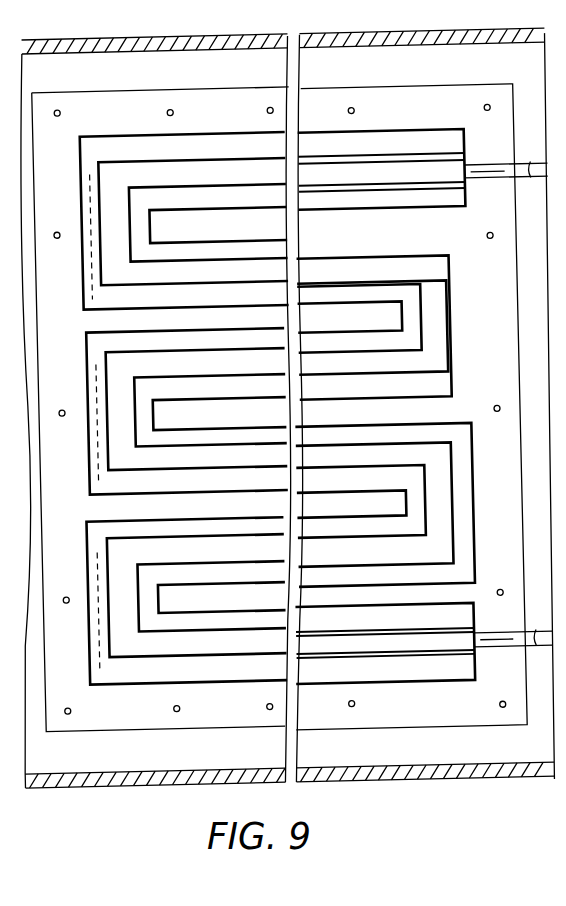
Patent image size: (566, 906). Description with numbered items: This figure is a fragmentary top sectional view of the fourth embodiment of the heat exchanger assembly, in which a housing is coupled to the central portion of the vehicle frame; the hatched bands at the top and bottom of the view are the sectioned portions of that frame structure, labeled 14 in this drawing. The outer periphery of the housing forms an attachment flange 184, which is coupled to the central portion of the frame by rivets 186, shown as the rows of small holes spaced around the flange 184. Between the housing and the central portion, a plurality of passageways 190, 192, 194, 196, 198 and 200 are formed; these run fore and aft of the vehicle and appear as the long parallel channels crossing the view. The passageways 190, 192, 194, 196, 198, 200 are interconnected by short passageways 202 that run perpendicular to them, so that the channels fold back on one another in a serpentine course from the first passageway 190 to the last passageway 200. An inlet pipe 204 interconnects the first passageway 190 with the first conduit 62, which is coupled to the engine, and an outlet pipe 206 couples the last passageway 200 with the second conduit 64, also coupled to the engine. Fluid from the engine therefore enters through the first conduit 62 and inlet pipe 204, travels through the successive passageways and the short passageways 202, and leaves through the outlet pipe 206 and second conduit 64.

The heater assembly wall 14 is at (242, 32).
The first conduit 62 is at (533, 166).
The second conduit 64 is at (549, 633).
The attachment flange 184 is at (140, 104).
The rivets 186 is at (64, 103).
The first passageway 190 is at (394, 178).
The passageway 192 is at (400, 217).
The passageway 194 is at (417, 366).
The passageway 196 is at (430, 461).
The passageway 198 is at (416, 554).
The last passageway 200 is at (396, 649).
The short passageways 202 is at (110, 196).
The inlet pipe 204 is at (489, 184).
The outlet pipe 206 is at (532, 644).